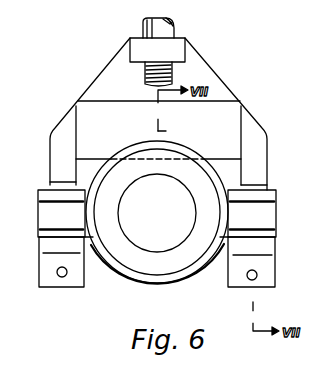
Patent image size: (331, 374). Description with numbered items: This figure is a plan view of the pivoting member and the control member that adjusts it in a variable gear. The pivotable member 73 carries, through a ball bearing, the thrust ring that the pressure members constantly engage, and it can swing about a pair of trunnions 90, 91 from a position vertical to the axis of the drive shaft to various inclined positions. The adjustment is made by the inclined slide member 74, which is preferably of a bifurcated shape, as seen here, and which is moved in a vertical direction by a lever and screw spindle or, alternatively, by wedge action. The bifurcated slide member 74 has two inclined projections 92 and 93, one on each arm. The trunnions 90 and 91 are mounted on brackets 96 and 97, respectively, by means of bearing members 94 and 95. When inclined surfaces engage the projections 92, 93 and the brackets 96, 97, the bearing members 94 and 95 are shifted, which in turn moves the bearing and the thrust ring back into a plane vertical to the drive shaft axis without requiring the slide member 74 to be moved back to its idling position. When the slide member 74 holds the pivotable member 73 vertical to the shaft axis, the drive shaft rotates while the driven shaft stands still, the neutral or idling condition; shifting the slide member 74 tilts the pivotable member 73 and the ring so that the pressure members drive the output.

The pivotable member 73 is at (122, 262).
The inclined slide member 74 is at (218, 115).
The trunnion 90 is at (268, 215).
The trunnion 91 is at (50, 215).
The inclined projection 92 is at (250, 185).
The inclined projection 93 is at (60, 185).
The bearing member 94 is at (268, 234).
The bearing member 95 is at (43, 234).
The bracket 96 is at (270, 275).
The bracket 97 is at (53, 281).